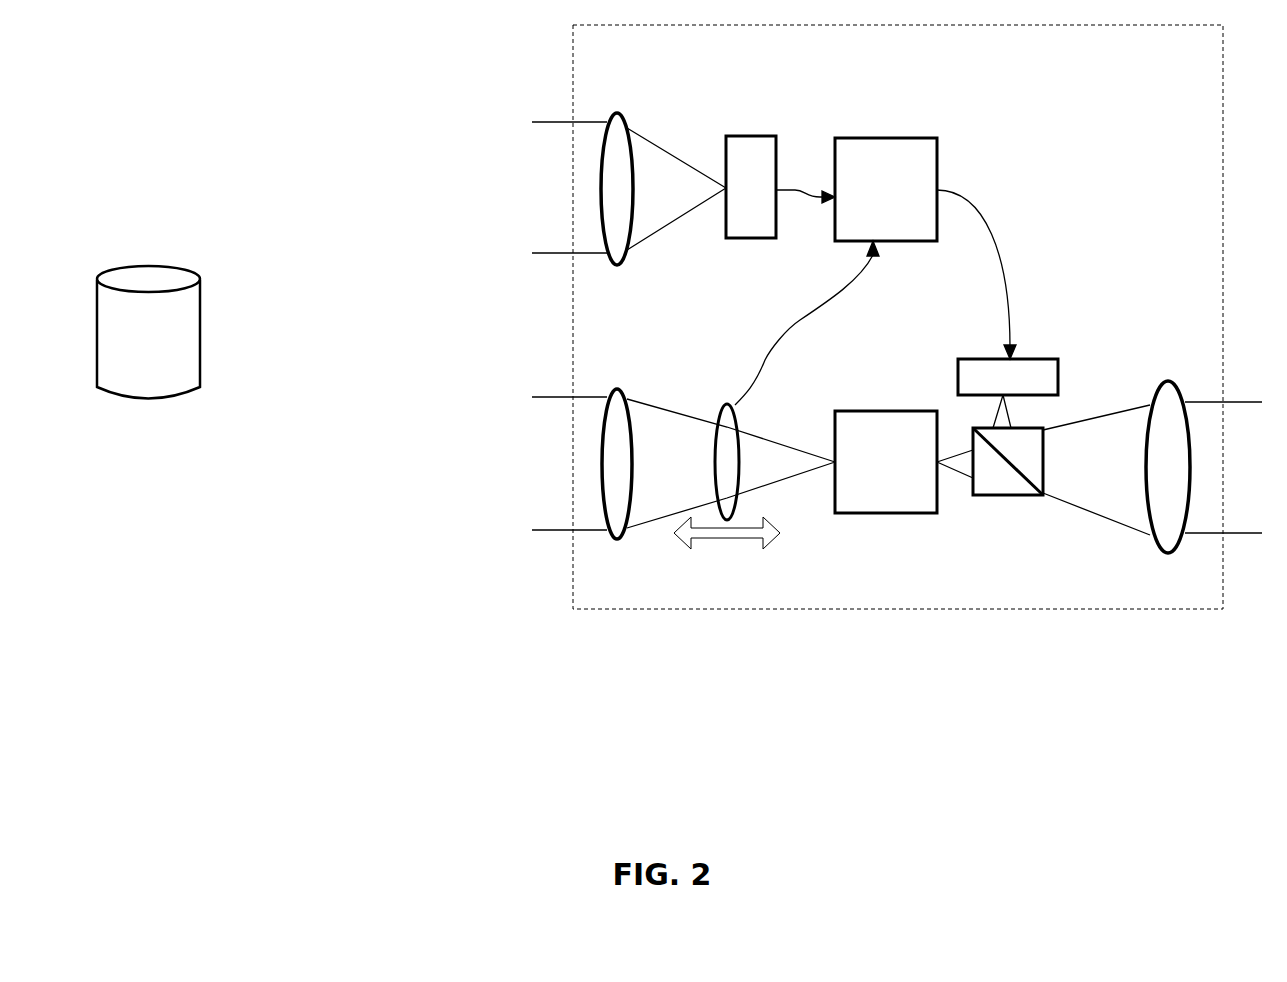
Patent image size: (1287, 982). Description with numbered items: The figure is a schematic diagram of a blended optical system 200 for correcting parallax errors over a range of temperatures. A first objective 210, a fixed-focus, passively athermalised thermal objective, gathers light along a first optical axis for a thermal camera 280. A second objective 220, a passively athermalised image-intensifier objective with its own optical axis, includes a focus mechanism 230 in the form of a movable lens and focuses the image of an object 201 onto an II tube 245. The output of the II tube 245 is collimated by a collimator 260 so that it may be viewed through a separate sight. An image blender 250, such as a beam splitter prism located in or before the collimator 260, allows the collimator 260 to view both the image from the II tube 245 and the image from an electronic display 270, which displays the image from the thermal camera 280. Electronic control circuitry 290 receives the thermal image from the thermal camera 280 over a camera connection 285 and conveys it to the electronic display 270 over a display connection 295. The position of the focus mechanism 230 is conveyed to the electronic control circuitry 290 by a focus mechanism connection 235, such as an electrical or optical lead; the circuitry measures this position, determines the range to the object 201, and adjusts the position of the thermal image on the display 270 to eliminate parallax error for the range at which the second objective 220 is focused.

The blended optical system 200 is at (720, 701).
The object 201 is at (148, 332).
The first objective 210 is at (622, 262).
The second objective 220 is at (622, 538).
The focus mechanism 230 is at (725, 405).
The focus mechanism connection 235 is at (769, 351).
The II tube 245 is at (904, 462).
The image blender 250 is at (1008, 485).
The collimator 260 is at (1160, 386).
The electronic display 270 is at (1008, 377).
The thermal camera 280 is at (751, 187).
The camera connection 285 is at (782, 190).
The electronic control circuitry 290 is at (886, 189).
The display connection 295 is at (992, 240).